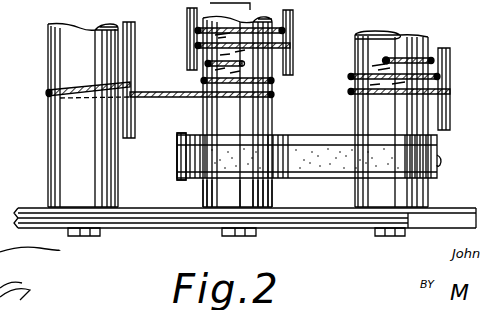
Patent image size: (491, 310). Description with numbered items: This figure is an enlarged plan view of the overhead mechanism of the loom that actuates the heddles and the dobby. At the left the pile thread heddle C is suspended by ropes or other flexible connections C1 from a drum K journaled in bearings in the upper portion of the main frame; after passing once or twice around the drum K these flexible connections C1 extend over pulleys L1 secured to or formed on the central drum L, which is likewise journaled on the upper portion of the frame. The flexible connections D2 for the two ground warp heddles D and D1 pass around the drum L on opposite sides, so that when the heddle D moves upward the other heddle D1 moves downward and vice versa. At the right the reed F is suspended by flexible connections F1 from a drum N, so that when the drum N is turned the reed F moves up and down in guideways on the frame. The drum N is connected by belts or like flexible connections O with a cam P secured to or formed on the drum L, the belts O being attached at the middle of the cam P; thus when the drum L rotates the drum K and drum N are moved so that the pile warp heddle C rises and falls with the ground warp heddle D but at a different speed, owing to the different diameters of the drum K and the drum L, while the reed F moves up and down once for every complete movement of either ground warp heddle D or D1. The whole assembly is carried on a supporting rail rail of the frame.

The flexible connections C1 is at (48, 91).
The pile thread heddle C is at (129, 50).
The drum K is at (60, 153).
The ground warp heddle D is at (187, 15).
The ground warp heddle D1 is at (293, 22).
The flexible connections D2 is at (240, 30).
The pulleys L1 is at (270, 100).
The drum L is at (222, 195).
The cam P is at (176, 145).
The flexible connections O is at (340, 165).
The drum N is at (410, 133).
The flexible connections F1 is at (358, 76).
The reed F is at (451, 68).
The base rail is at (245, 218).